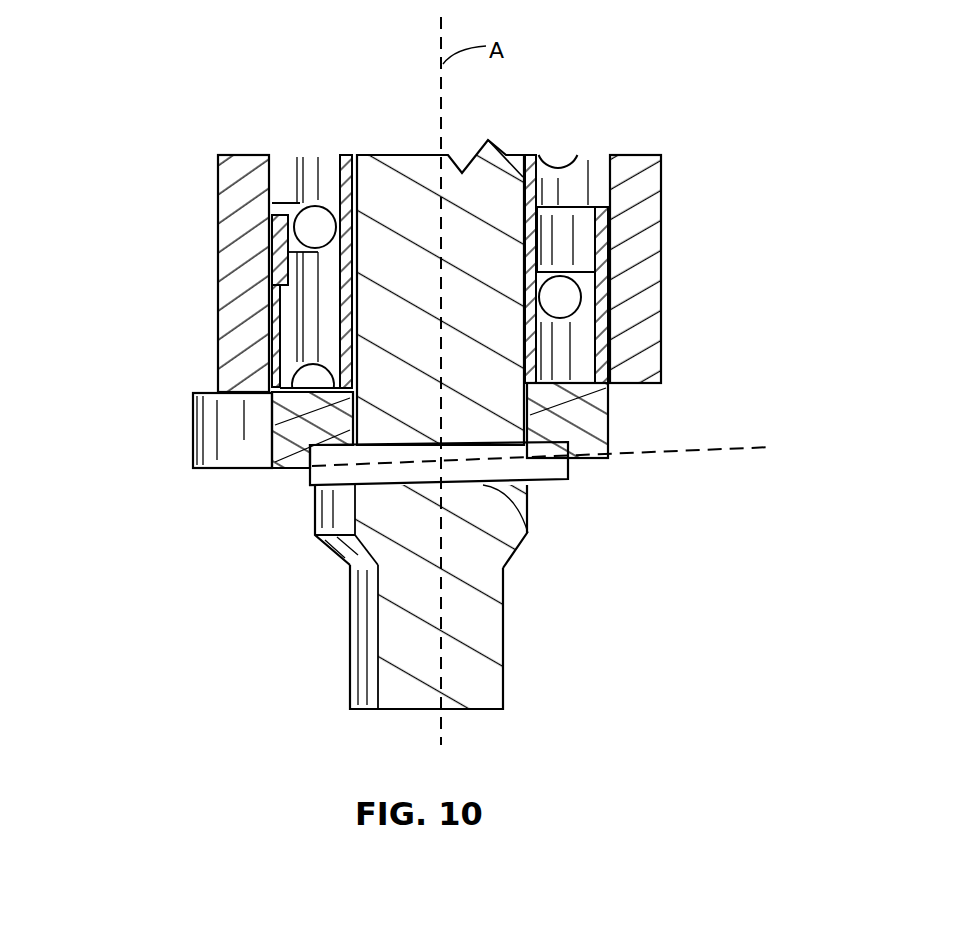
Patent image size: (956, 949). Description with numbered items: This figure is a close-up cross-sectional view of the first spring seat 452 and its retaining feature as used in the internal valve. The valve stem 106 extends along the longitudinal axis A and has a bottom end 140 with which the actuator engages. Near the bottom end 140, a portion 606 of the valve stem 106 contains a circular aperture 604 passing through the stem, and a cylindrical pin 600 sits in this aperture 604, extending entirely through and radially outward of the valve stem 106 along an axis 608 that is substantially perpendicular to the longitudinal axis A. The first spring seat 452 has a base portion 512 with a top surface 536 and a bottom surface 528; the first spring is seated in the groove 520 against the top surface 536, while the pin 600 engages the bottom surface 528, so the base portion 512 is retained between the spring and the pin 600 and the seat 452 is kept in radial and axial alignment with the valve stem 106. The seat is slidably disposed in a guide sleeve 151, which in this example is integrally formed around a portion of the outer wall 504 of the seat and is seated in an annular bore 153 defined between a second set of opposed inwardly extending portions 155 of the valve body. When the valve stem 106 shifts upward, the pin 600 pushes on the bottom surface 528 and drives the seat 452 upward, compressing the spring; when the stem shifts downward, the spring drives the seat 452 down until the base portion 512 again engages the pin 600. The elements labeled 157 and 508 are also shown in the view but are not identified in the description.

The valve stem 106 is at (480, 177).
The second set of opposed inwardly extending portions 155 is at (233, 230).
The annular bore 153 is at (699, 266).
The guide sleeve 151 is at (655, 292).
The groove 520 is at (241, 271).
The bearing balls 157 is at (318, 372).
The second bearing 508 is at (655, 370).
The first spring seat 452 is at (654, 420).
The outer wall 504 is at (520, 414).
The top surface 536 is at (300, 402).
The base portion 512 is at (300, 418).
The bottom surface 528 is at (300, 433).
The cylindrical pin 600 is at (560, 480).
The axis 608 is at (757, 448).
The circular aperture 604 is at (530, 535).
The portion of the valve stem 606 is at (495, 597).
The bottom end 140 is at (458, 708).